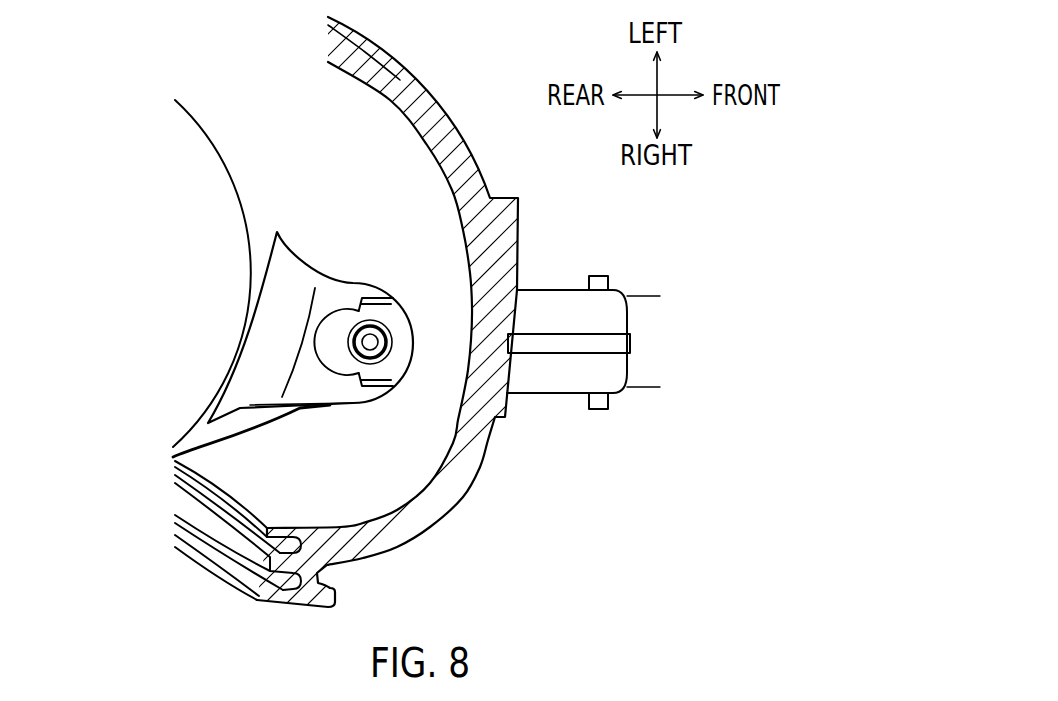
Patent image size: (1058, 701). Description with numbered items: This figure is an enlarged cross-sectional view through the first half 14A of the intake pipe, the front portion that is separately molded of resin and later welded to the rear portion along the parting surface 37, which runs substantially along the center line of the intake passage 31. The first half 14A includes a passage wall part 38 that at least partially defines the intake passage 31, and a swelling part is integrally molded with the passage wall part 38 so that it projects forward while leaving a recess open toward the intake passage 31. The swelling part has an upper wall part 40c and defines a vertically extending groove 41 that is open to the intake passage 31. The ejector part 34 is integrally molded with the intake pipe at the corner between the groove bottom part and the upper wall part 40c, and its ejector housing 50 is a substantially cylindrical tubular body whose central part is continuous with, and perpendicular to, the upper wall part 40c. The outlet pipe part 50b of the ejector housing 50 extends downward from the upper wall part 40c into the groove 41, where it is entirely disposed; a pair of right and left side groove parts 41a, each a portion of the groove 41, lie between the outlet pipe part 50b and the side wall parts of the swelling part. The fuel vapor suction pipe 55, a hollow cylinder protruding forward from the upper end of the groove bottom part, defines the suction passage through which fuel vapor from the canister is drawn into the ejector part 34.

The first half 14A is at (426, 80).
The passage wall part 38 is at (452, 150).
The ejector part 34 is at (583, 327).
The fuel vapor suction pipe 55 is at (553, 378).
The intake passage 31 is at (207, 185).
The ejector housing 50 is at (347, 314).
The outlet pipe part 50b is at (340, 327).
The groove 41 is at (318, 362).
The side groove parts 41a is at (363, 294).
The upper wall part 40c is at (333, 387).
The parting surface 37 is at (203, 548).